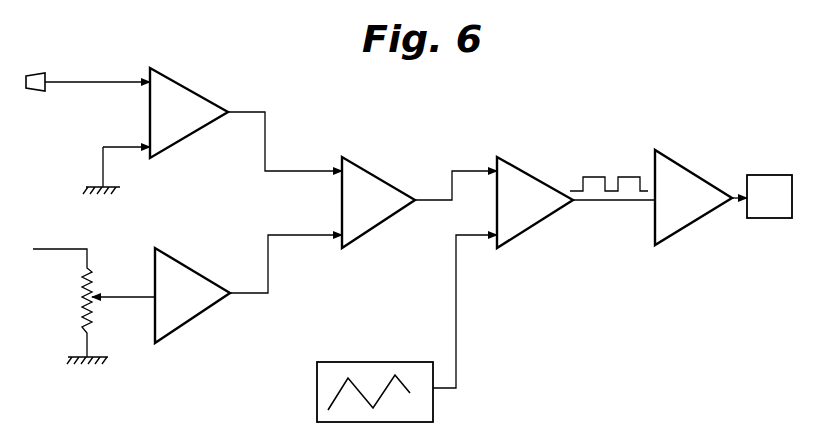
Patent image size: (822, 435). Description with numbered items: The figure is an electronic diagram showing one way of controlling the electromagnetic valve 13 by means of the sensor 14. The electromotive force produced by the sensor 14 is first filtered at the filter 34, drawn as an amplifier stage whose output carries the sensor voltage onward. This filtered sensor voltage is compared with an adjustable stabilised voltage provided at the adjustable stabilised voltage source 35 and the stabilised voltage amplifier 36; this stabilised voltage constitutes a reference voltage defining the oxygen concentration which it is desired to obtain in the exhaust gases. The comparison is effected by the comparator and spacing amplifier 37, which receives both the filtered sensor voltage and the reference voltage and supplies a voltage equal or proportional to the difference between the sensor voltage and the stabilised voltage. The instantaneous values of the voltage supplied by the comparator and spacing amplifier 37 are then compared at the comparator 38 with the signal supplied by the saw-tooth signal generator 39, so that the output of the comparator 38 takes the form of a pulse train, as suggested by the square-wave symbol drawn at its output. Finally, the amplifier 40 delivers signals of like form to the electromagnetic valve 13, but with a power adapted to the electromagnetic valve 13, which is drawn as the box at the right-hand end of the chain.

The electromagnetic valve 13 is at (775, 211).
The sensor 14 is at (40, 91).
The filter 34 is at (200, 124).
The adjustable stabilised voltage source 35 is at (58, 251).
The stabilised voltage amplifier 36 is at (205, 305).
The comparator and spacing amplifier 37 is at (388, 214).
The comparator 38 is at (527, 223).
The saw-tooth signal generator 39 is at (383, 367).
The amplifier 40 is at (695, 212).